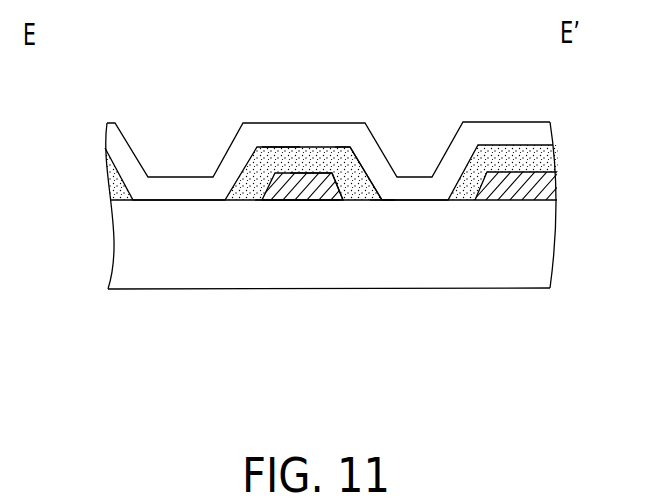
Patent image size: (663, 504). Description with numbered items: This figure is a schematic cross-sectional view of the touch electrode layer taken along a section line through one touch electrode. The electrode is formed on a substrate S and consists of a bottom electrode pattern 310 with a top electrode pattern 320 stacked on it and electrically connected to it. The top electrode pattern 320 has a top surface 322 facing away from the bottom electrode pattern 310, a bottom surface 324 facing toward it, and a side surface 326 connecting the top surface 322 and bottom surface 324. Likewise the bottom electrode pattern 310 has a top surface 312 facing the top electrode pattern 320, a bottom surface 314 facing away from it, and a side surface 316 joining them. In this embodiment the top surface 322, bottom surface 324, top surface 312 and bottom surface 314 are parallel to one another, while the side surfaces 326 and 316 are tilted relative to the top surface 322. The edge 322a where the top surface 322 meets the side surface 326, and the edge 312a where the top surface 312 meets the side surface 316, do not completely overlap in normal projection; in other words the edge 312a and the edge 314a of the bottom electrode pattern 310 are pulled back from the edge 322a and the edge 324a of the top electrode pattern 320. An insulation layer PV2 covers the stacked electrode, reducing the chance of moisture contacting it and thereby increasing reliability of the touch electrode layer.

The substrate S is at (547, 230).
The insulation layer PV2 is at (540, 126).
The bottom electrode pattern 310 is at (543, 187).
The top surface of bottom electrode pattern 312 is at (312, 172).
The edge of top surface of bottom electrode pattern 312a is at (332, 172).
The bottom surface of bottom electrode pattern 314 is at (303, 203).
The edge of bottom surface of bottom electrode pattern 314a is at (262, 203).
The side surface of bottom electrode pattern 316 is at (346, 182).
The top electrode pattern 320 is at (248, 160).
The top surface of top electrode pattern 322 is at (282, 147).
The edge of top surface of top electrode pattern 322a is at (353, 145).
The bottom surface of top electrode pattern 324 is at (316, 182).
The edge of bottom surface of top electrode pattern 324a is at (384, 203).
The side surface of top electrode pattern 326 is at (367, 171).